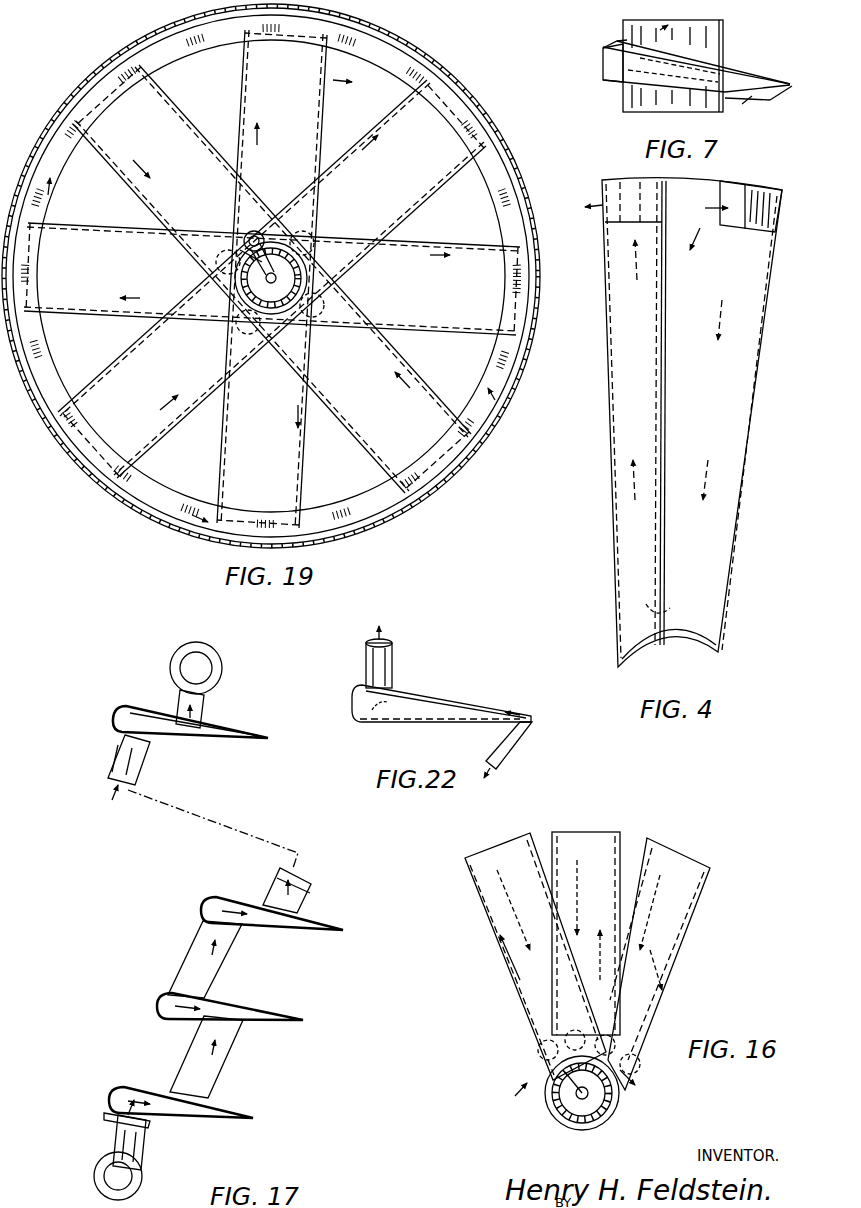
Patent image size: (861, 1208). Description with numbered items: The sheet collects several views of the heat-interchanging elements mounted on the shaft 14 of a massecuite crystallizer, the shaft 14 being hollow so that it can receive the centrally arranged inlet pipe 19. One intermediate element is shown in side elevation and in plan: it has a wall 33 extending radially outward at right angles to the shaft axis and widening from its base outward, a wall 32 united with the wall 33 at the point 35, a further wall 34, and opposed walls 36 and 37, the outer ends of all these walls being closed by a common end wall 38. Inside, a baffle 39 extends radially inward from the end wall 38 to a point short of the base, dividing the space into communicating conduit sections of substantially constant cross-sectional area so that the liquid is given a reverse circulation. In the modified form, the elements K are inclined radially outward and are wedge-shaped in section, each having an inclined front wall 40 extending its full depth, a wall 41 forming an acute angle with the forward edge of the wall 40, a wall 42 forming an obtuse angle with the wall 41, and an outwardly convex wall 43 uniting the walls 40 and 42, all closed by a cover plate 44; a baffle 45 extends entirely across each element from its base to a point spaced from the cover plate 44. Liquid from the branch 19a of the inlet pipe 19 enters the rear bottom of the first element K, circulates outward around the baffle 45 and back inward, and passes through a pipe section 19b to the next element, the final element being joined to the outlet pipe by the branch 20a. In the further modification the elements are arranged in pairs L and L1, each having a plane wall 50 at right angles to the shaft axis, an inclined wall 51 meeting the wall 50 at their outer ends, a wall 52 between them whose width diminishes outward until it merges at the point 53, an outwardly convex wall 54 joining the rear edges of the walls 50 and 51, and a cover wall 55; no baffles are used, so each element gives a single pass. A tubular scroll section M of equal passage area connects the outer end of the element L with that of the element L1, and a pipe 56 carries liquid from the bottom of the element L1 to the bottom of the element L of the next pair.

In FIG. 16, the shaft 14 is at (619, 1115).
In FIG. 19, the inlet pipe 19 is at (240, 322).
In FIG. 17, the inlet pipe 19 is at (135, 1184).
In FIG. 16, the inlet pipe 19 is at (578, 1128).
In FIG. 19, the branch 19a is at (262, 232).
In FIG. 17, the branch 19a is at (150, 1135).
In FIG. 16, the branch 19a is at (553, 1100).
In FIG. 19, the pipe section 19b is at (312, 238).
In FIG. 17, the pipe section 19b is at (310, 890).
In FIG. 16, the pipe section 19b is at (532, 1072).
In FIG. 17, the branch 20a is at (218, 699).
In FIG. 7, the wall 32 is at (738, 66).
In FIG. 7, the wall 33 is at (718, 105).
In FIG. 4, the wall 33 is at (730, 322).
In FIG. 7, the wall 34 is at (625, 88).
In FIG. 4, the wall 34 is at (618, 268).
In FIG. 7, the point 35 is at (792, 86).
In FIG. 4, the point 35 is at (783, 194).
In FIG. 7, the wall 36 is at (605, 58).
In FIG. 7, the wall 37 is at (768, 80).
In FIG. 7, the end wall 38 is at (649, 52).
In FIG. 4, the end wall 38 is at (722, 180).
In FIG. 7, the baffle 39 is at (730, 44).
In FIG. 4, the baffle 39 is at (665, 400).
In FIG. 17, the front wall 40 is at (250, 1008).
In FIG. 17, the wall 41 is at (268, 1025).
In FIG. 16, the wall 41 is at (700, 918).
In FIG. 17, the wall 42 is at (170, 1020).
In FIG. 16, the wall 42 is at (660, 840).
In FIG. 17, the convex wall 43 is at (160, 1005).
In FIG. 16, the cover plate 44 is at (492, 846).
In FIG. 17, the baffle 45 is at (162, 705).
In FIG. 16, the baffle 45 is at (720, 896).
In FIG. 22, the plane wall 50 is at (414, 725).
In FIG. 22, the wall 51 is at (452, 700).
In FIG. 22, the wall 52 is at (535, 717).
In FIG. 22, the point 53 is at (535, 723).
In FIG. 22, the convex wall 54 is at (355, 697).
In FIG. 22, the cover wall 55 is at (406, 700).
In FIG. 22, the pipe 56 is at (370, 662).
In FIG. 17, the heat-interchanging element K is at (222, 1108).
In FIG. 16, the heat-interchanging element K is at (598, 832).
In FIG. 19, the heat-interchanging element L is at (271, 276).
In FIG. 19, the heat-interchanging element L1 is at (272, 279).
In FIG. 22, the tubular scroll section M is at (495, 746).